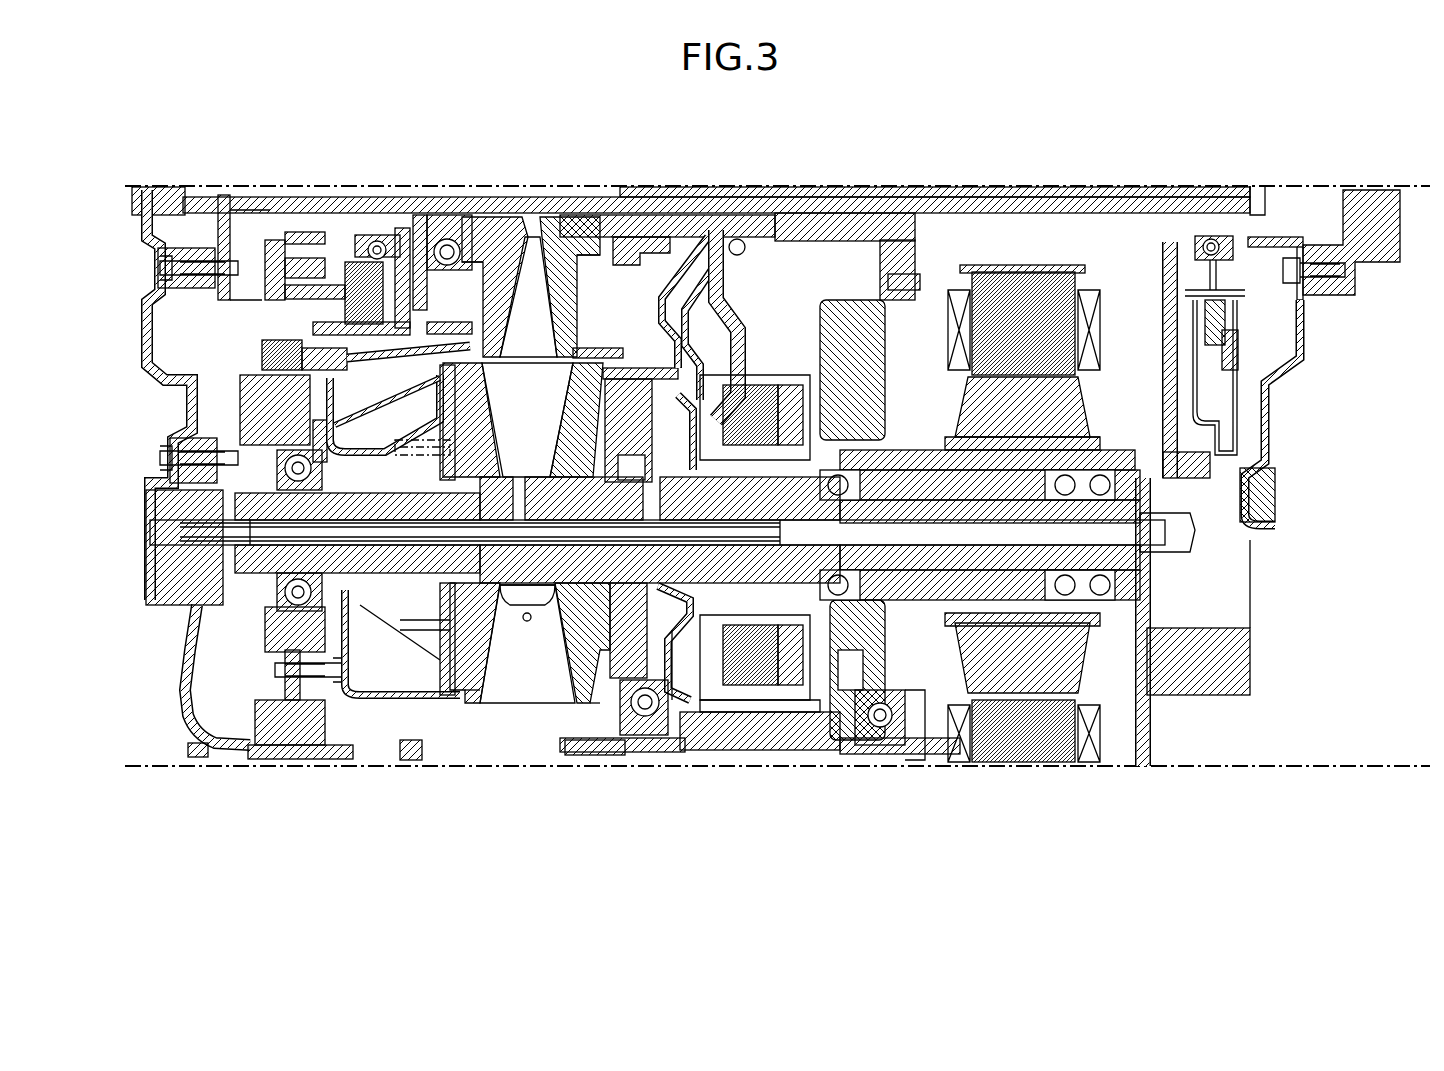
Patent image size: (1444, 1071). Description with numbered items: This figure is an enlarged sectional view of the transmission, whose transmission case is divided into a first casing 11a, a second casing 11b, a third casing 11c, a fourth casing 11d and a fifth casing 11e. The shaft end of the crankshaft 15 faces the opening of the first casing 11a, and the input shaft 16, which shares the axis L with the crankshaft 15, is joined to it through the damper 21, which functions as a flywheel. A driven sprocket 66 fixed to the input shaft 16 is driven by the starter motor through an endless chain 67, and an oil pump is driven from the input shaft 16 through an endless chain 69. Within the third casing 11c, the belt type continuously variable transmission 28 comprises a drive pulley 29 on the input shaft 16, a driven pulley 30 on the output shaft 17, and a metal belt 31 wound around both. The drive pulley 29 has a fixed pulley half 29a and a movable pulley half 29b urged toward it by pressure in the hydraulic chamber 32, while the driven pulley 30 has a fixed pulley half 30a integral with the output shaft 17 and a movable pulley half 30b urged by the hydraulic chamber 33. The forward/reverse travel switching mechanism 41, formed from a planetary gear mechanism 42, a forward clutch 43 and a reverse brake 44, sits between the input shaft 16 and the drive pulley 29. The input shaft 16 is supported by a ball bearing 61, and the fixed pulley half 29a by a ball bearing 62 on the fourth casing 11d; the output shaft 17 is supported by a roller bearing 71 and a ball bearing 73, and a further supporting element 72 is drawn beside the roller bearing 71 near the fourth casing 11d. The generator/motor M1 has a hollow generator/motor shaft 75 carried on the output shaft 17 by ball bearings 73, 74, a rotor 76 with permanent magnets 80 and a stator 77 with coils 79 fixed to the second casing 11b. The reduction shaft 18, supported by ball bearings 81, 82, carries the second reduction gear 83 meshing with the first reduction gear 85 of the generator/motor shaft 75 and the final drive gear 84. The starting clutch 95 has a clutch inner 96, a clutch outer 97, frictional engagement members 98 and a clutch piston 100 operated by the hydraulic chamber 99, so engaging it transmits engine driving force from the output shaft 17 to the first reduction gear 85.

The first casing 11a is at (1188, 680).
The second casing 11b is at (922, 740).
The third casing 11c is at (615, 700).
The fourth casing 11d is at (258, 718).
The fifth casing 11e is at (180, 672).
The crankshaft 15 is at (1373, 262).
The input shaft 16 is at (772, 190).
The output shaft 17 is at (495, 470).
The reduction shaft 18 is at (820, 760).
The damper 21 is at (1283, 390).
The belt type continuously variable transmission 28 is at (455, 745).
The drive pulley 29 is at (594, 122).
The fixed pulley half 29a is at (502, 186).
The movable pulley half 29b is at (557, 186).
The driven pulley 30 is at (572, 838).
The fixed pulley half 30a is at (545, 740).
The movable pulley half 30b is at (488, 740).
The metal belt 31 is at (524, 618).
The hydraulic chamber 32 is at (600, 309).
The hydraulic chamber 33 is at (420, 420).
The forward/reverse travel switching mechanism 41 is at (240, 318).
The planetary gear mechanism 42 is at (262, 285).
The forward clutch 43 is at (492, 312).
The reverse brake 44 is at (255, 350).
The ball bearing 61 is at (742, 250).
The ball bearing 62 is at (446, 186).
The driven sprocket 66 is at (905, 278).
The endless chain 67 is at (905, 292).
The endless chain 69 is at (855, 280).
The roller bearing 71 is at (625, 425).
The support 72 is at (258, 403).
The ball bearing 73 is at (920, 500).
The ball bearing 74 is at (1045, 490).
The generator/motor shaft 75 is at (915, 462).
The rotor 76 is at (1092, 412).
The stator 77 is at (1085, 270).
The coils 79 is at (955, 350).
The permanent magnets 80 is at (975, 400).
The ball bearing 81 is at (880, 745).
The ball bearing 82 is at (640, 760).
The second reduction gear 83 is at (800, 655).
The final drive gear 84 is at (745, 730).
The first reduction gear 85 is at (826, 432).
The starting clutch 95 is at (700, 352).
The clutch inner 96 is at (800, 420).
The clutch outer 97 is at (716, 372).
The frictional engagement members 98 is at (758, 383).
The hydraulic chamber 99 is at (650, 375).
The clutch piston 100 is at (672, 720).
The generator/motor M1 is at (1025, 245).
The axis L is at (1320, 186).